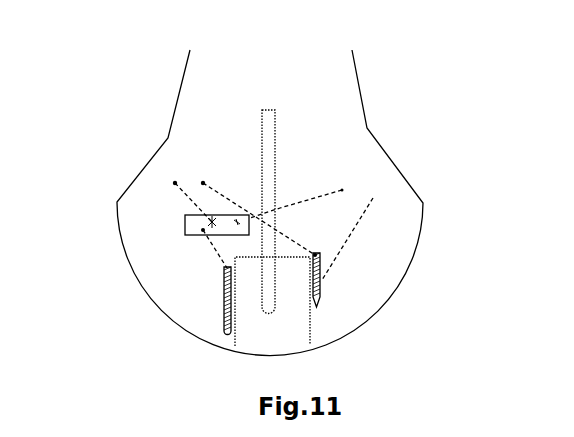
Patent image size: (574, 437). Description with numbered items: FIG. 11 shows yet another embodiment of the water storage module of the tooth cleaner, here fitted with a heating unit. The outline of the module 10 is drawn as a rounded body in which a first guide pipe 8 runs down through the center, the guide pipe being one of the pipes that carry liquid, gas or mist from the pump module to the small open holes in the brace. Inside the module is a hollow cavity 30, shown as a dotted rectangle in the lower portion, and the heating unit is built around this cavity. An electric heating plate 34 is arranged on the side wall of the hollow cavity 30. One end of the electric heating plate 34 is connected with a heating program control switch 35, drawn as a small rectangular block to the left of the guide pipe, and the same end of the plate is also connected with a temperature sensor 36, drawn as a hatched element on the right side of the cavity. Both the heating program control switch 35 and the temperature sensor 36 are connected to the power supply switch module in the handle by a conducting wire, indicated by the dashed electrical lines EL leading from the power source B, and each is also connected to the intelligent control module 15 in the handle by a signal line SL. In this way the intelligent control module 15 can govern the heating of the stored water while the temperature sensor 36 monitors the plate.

The nozzle body 10 is at (270, 196).
The first guide pipe 8 is at (278, 143).
The intelligent control module 15 is at (305, 193).
The heating program control switch 35 is at (185, 224).
The hollow cavity 30 is at (333, 317).
The electric heating plate 34 is at (220, 316).
The temperature sensor 36 is at (330, 298).
The battery B is at (188, 170).
The electrical line EL is at (237, 225).
The signal line SL is at (347, 239).